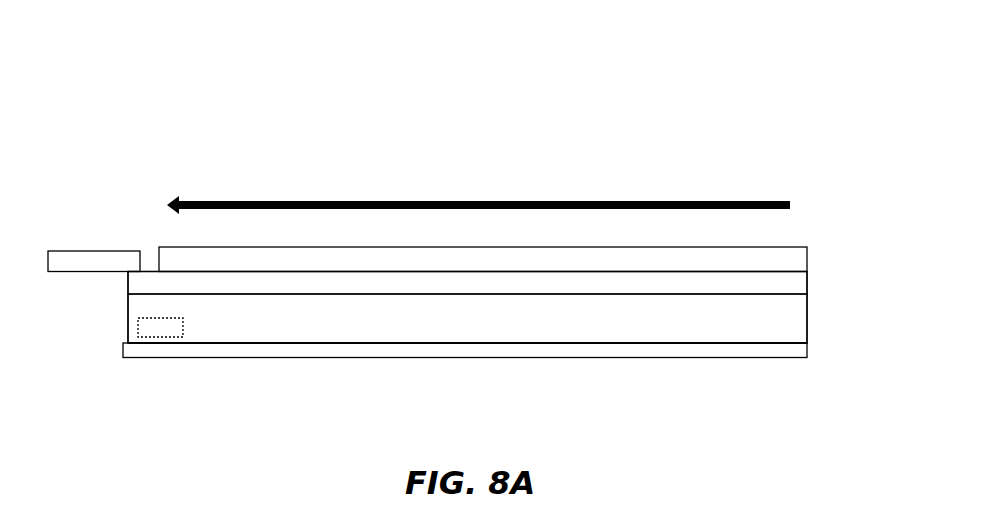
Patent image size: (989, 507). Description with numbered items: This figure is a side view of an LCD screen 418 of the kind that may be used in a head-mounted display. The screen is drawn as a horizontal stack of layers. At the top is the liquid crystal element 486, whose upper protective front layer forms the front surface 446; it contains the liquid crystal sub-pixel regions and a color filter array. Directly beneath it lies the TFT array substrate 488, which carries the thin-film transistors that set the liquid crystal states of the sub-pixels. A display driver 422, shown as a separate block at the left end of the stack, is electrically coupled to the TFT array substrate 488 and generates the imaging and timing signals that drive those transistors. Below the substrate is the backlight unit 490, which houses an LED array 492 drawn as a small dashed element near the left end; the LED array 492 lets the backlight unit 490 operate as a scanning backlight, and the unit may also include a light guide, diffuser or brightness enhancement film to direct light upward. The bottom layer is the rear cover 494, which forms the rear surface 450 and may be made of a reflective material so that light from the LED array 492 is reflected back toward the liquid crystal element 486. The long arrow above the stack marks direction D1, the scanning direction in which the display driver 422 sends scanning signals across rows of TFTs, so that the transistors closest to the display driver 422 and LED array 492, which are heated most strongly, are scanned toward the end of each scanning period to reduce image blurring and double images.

The LCD screen 418 is at (80, 60).
The direction D1 is at (513, 200).
The display driver 422 is at (83, 251).
The front surface 446 is at (782, 247).
The liquid crystal element 486 is at (807, 260).
The TFT array substrate 488 is at (807, 283).
The backlight unit 490 is at (807, 315).
The rear cover 494 is at (807, 348).
The LED array 492 is at (127, 327).
The rear surface 450 is at (577, 358).